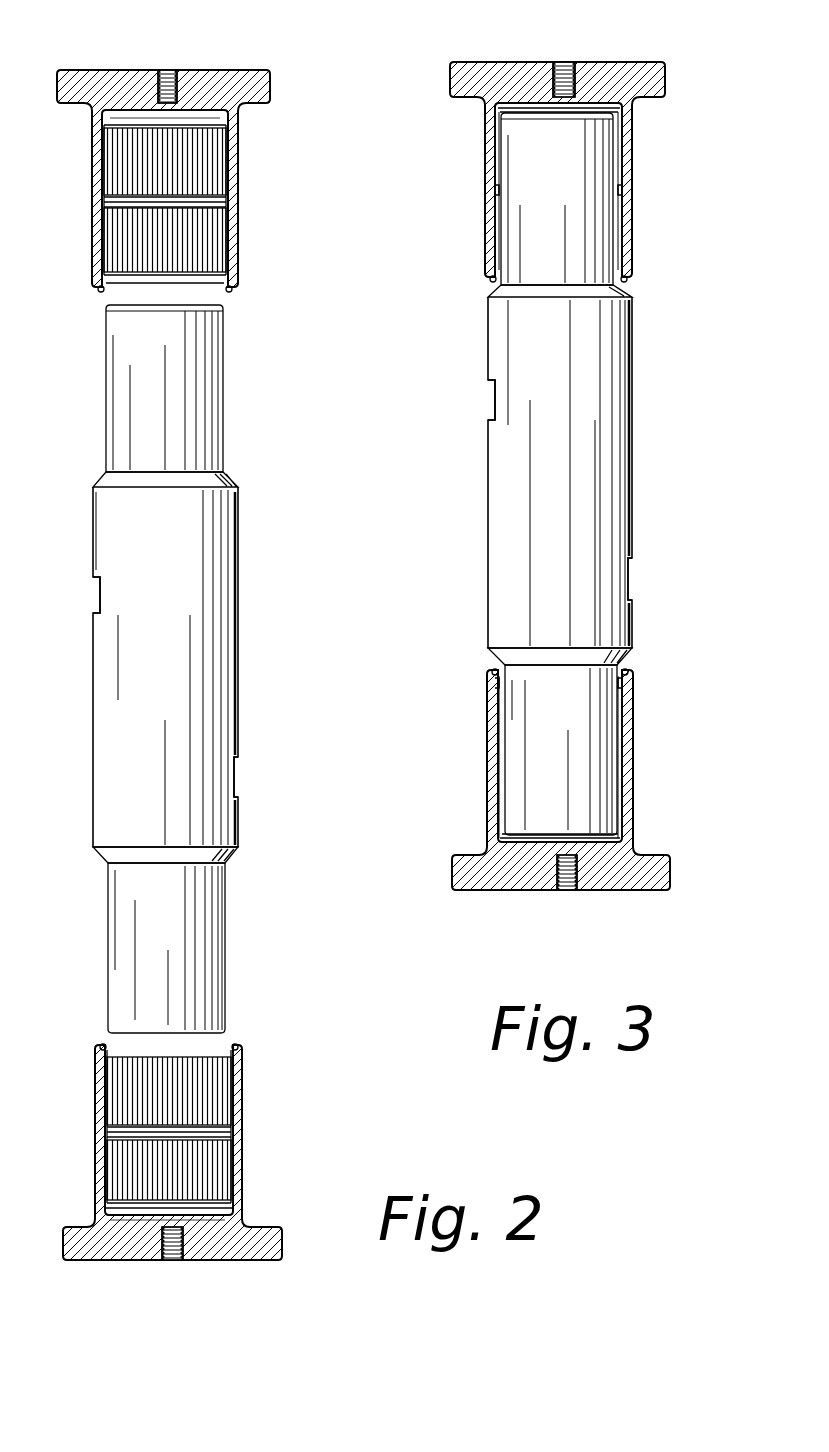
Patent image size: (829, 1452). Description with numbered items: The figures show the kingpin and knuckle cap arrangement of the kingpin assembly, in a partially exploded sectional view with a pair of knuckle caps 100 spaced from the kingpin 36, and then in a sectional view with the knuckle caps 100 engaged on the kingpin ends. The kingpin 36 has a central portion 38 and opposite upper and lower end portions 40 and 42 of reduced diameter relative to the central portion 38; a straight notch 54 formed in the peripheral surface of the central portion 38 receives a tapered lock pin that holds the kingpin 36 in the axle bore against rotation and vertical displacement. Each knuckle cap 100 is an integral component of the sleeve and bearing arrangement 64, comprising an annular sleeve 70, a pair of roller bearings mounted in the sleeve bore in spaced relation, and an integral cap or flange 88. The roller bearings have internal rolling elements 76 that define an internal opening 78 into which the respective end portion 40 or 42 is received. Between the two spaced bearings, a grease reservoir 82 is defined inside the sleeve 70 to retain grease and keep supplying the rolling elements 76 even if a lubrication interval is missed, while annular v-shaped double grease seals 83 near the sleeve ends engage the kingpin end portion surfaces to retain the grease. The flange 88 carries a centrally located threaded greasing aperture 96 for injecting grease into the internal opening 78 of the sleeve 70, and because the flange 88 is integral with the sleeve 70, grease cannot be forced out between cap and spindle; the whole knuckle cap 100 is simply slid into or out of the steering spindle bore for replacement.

In FIG. 2, the kingpin 36 is at (246, 522).
In FIG. 3, the kingpin 36 is at (640, 350).
In FIG. 2, the central portion 38 is at (205, 622).
In FIG. 3, the central portion 38 is at (602, 462).
In FIG. 2, the upper end portion 40 is at (197, 377).
In FIG. 3, the upper end portion 40 is at (578, 160).
In FIG. 2, the lower end portion 42 is at (210, 930).
In FIG. 3, the lower end portion 42 is at (595, 715).
In FIG. 2, the straight notch 54 is at (100, 594).
In FIG. 3, the straight notch 54 is at (492, 400).
In FIG. 2, the sleeve and bearing arrangement 64 is at (72, 66).
In FIG. 3, the sleeve and bearing arrangement 64 is at (453, 58).
In FIG. 2, the sleeve 70 is at (96, 181).
In FIG. 3, the sleeve 70 is at (488, 186).
In FIG. 2, the internal rolling elements 76 is at (175, 180).
In FIG. 2, the internal opening 78 is at (200, 117).
In FIG. 3, the internal opening 78 is at (580, 106).
In FIG. 2, the grease reservoir 82 is at (212, 200).
In FIG. 3, the grease reservoir 82 is at (622, 194).
In FIG. 2, the double grease seal 83 is at (97, 291).
In FIG. 3, the double grease seal 83 is at (486, 291).
In FIG. 2, the flange 88 is at (240, 75).
In FIG. 3, the flange 88 is at (616, 64).
In FIG. 2, the threaded greasing aperture 96 is at (167, 70).
In FIG. 3, the threaded greasing aperture 96 is at (565, 62).
In FIG. 2, the knuckle cap 100 is at (274, 62).
In FIG. 3, the knuckle cap 100 is at (668, 55).